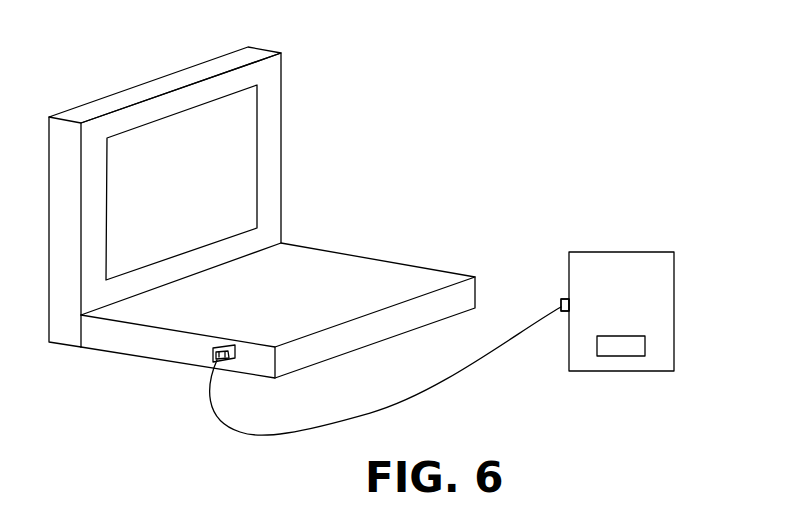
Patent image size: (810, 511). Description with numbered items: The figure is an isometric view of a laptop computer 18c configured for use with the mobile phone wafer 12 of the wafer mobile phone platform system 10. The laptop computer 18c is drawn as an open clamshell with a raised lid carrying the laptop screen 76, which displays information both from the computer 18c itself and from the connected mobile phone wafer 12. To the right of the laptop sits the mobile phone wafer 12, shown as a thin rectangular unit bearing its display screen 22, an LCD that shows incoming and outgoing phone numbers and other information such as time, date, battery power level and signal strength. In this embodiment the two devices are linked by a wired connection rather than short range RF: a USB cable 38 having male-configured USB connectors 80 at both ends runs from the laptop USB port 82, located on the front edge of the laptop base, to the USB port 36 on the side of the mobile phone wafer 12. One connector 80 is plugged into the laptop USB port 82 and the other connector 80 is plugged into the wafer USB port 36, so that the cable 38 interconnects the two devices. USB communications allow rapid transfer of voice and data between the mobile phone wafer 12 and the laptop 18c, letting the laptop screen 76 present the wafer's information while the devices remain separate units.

The wafer mobile phone platform system 10 is at (674, 190).
The mobile phone wafer 12 is at (592, 263).
The laptop computer 18c is at (378, 255).
The display screen 22 is at (622, 350).
The USB port 36 is at (558, 322).
The USB cable 38 is at (457, 377).
The laptop screen 76 is at (235, 140).
The male-configured USB connectors 80 is at (226, 359).
The laptop USB port 82 is at (206, 352).